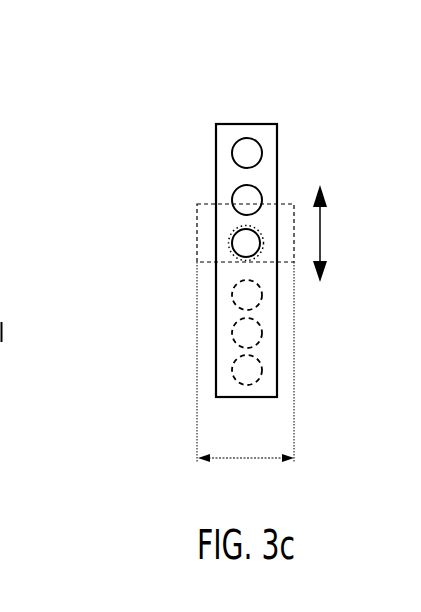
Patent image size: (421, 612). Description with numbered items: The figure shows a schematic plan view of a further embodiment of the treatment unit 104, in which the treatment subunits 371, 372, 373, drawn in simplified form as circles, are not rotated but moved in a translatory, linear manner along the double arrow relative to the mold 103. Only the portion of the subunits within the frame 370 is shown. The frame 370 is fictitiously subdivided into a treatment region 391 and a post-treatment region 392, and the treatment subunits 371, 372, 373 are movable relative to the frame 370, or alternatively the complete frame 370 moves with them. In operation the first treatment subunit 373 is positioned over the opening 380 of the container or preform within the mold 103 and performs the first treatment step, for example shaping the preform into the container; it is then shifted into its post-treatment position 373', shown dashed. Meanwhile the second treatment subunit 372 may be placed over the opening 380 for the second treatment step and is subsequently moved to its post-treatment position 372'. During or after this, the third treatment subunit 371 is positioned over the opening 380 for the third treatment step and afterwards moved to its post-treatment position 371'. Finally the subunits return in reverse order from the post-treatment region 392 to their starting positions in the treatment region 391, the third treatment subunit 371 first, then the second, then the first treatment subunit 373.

The treatment unit 104 is at (286, 105).
The frame 370 is at (278, 137).
The third treatment subunit 371 is at (201, 151).
The second treatment subunit 372 is at (201, 194).
The first treatment subunit 373 is at (202, 244).
The post-treatment position of the third treatment subunit 371' is at (201, 298).
The post-treatment position of the second treatment subunit 372' is at (297, 333).
The post-treatment position of the first treatment subunit 373' is at (201, 370).
The opening 380 is at (262, 240).
The mold 103 is at (294, 219).
The treatment region 391 is at (318, 169).
The post-treatment region 392 is at (320, 308).